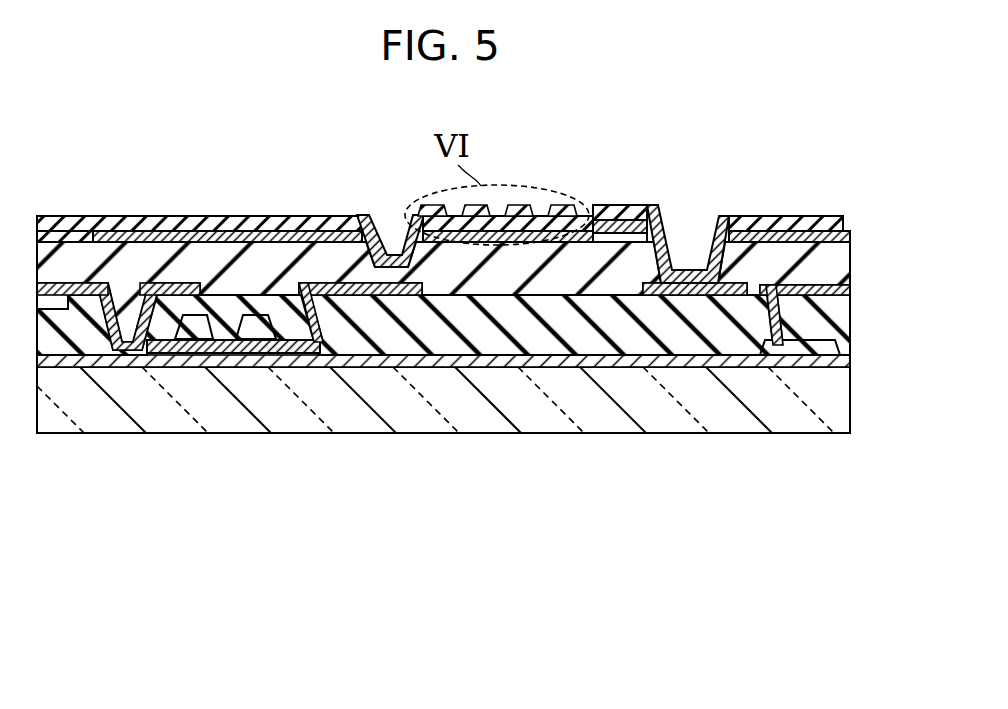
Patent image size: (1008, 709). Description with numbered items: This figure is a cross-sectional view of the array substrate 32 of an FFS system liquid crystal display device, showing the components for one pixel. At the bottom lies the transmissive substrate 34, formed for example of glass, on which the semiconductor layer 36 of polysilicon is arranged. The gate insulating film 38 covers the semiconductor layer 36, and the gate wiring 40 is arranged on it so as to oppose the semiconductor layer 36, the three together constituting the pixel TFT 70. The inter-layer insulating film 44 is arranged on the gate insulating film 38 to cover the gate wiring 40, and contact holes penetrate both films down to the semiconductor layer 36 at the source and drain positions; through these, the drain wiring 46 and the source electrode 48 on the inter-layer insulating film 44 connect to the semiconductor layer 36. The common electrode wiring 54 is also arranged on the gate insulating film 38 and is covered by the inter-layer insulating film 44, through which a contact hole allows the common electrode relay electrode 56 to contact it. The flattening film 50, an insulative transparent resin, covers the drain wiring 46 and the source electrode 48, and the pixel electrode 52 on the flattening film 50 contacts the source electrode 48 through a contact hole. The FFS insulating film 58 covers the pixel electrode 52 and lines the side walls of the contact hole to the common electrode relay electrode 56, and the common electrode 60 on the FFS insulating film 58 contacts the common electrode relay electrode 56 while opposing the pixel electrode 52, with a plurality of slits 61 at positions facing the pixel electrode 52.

The array substrate 32 is at (189, 110).
The transmissive substrate 34 is at (845, 401).
The semiconductor layer 36 is at (247, 353).
The gate insulating film 38 is at (845, 361).
The gate wiring 40 is at (190, 313).
The inter-layer insulating film 44 is at (845, 330).
The drain wiring 46 is at (127, 352).
The source electrode 48 is at (408, 345).
The flattening film 50 is at (845, 262).
The pixel electrode 52 is at (288, 236).
The common electrode wiring 54 is at (763, 348).
The common electrode relay electrode 56 is at (703, 300).
The FFS insulating film 58 is at (231, 225).
The common electrode 60 is at (845, 219).
The slits 61 is at (541, 202).
The pixel TFT 70 is at (191, 396).